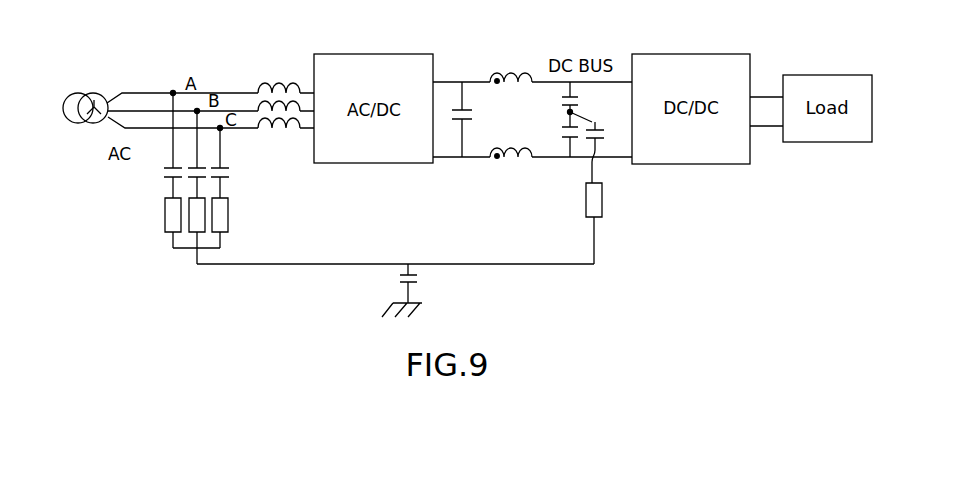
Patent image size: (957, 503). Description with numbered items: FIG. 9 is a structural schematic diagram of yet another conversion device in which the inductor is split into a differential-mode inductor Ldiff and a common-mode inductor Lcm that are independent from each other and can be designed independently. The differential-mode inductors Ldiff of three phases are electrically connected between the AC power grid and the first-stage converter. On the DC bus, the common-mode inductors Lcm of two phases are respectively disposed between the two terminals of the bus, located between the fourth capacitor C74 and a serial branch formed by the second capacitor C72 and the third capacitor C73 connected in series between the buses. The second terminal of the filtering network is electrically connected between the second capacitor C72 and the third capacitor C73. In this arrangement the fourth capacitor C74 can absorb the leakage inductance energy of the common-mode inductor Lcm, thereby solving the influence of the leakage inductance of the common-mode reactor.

The second capacitor C72 is at (551, 97).
The third capacitor C73 is at (551, 134).
The fourth capacitor C74 is at (483, 119).
The common-mode inductor Lcm is at (511, 105).
The differential-mode inductor Ldiff is at (276, 93).